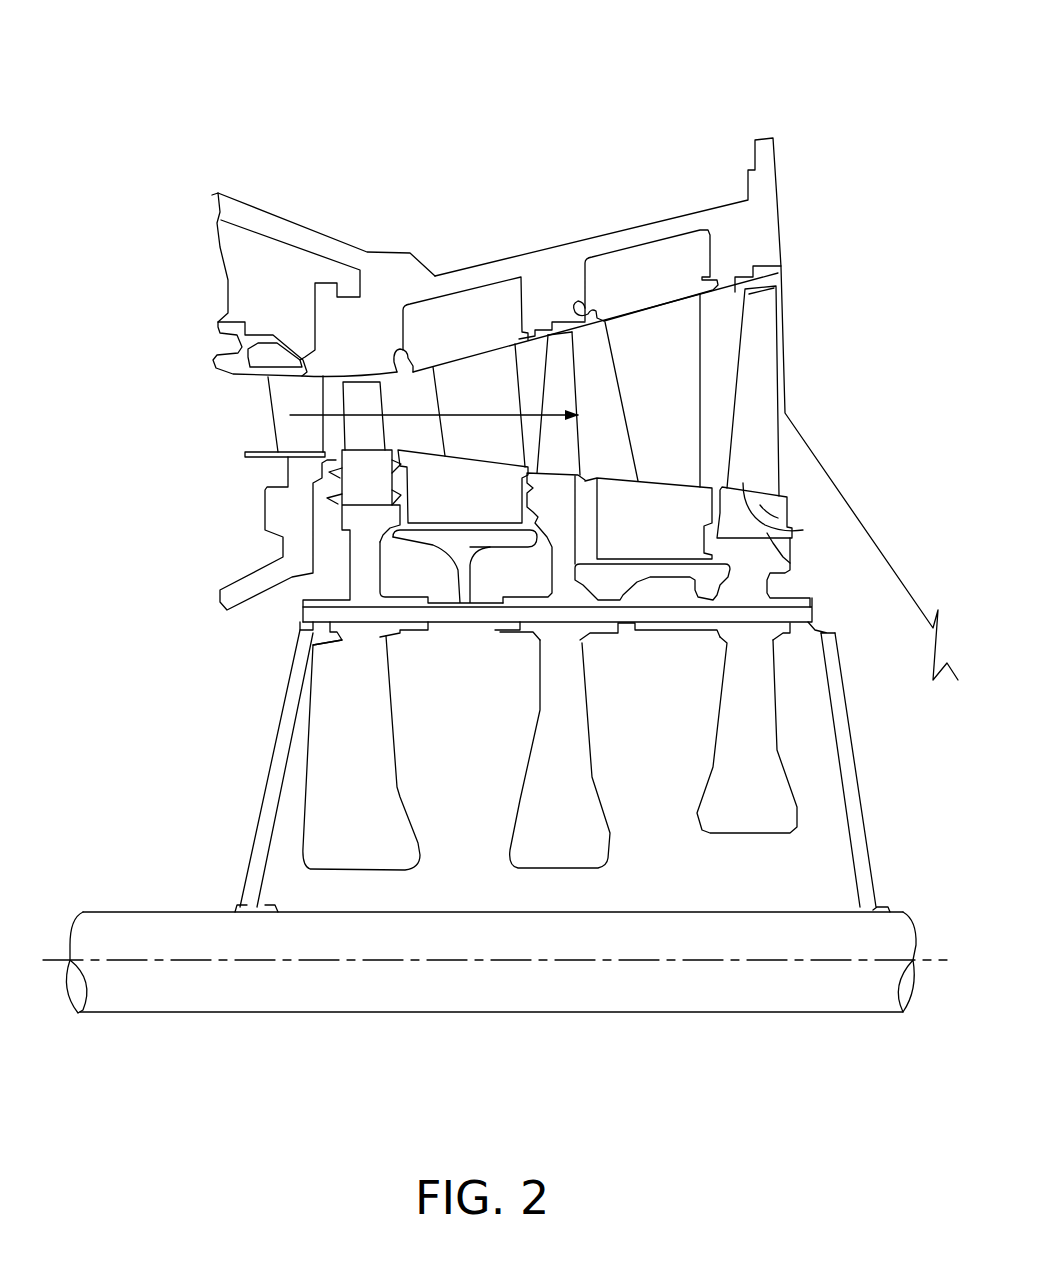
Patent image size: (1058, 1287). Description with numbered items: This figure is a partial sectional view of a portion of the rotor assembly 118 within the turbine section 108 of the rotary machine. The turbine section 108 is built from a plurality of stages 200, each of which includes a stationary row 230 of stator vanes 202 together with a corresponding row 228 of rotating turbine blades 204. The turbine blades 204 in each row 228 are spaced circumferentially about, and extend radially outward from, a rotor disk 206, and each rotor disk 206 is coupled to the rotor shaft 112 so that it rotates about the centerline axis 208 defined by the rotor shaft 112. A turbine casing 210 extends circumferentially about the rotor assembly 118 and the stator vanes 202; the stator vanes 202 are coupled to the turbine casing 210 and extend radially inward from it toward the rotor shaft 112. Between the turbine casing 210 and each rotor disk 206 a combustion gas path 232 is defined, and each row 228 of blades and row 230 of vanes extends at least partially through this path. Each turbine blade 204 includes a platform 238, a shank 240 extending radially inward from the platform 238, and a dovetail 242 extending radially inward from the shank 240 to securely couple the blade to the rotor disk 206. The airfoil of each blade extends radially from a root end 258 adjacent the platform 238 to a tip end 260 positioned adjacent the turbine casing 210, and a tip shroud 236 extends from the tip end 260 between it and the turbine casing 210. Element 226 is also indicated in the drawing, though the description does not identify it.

The turbine section 108 is at (400, 162).
The rotor shaft 112 is at (648, 908).
The rotor assembly 118 is at (811, 76).
The stage 200 is at (412, 337).
The stator vane 202 is at (499, 397).
The turbine blade 204 is at (364, 397).
The rotor disk 206 is at (370, 762).
The centerline axis 208 is at (143, 960).
The turbine casing 210 is at (532, 350).
The seal 226 is at (534, 333).
The row of rotating turbine blades 228 is at (349, 357).
The stationary row of stator vanes 230 is at (506, 315).
The combustion gas path 232 is at (297, 414).
The tip shroud 236 is at (785, 268).
The platform 238 is at (758, 492).
The shank 240 is at (770, 511).
The dovetail 242 is at (770, 533).
The root end 258 is at (767, 533).
The tip end 260 is at (758, 293).